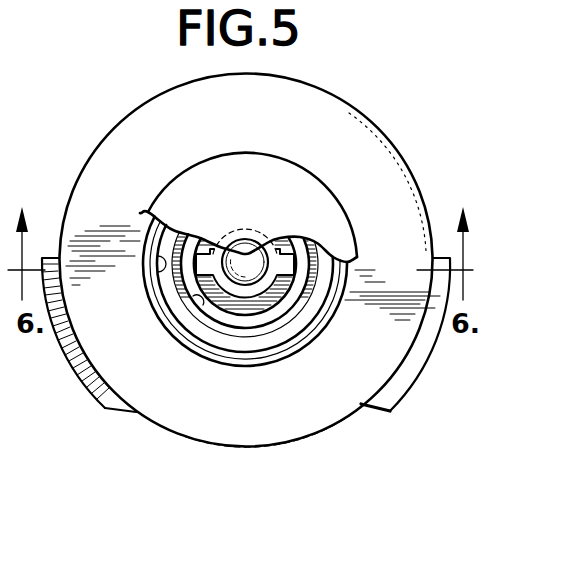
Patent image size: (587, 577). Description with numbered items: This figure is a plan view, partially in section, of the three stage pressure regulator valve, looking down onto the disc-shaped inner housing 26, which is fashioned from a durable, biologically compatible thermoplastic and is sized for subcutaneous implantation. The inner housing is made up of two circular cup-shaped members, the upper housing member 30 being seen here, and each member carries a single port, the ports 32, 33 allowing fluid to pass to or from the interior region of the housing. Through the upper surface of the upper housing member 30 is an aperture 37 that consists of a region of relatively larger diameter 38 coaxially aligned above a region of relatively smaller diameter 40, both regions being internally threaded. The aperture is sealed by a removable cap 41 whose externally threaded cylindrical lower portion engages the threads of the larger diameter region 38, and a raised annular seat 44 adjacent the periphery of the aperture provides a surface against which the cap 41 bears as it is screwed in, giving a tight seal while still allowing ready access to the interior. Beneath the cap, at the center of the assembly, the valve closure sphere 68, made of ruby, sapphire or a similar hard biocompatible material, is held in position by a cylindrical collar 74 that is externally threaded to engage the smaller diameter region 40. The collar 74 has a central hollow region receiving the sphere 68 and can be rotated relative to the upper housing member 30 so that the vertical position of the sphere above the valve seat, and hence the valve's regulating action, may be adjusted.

The inner housing 26 is at (190, 455).
The upper housing member 30 is at (388, 190).
The port 32 is at (412, 384).
The port 33 is at (88, 397).
The aperture 37 is at (294, 355).
The region of relatively larger diameter 38 is at (163, 278).
The region of relatively smaller diameter 40 is at (205, 303).
The removable cap 41 is at (285, 146).
The raised annular seat 44 is at (233, 355).
The sphere 68 is at (244, 259).
The cylindrical collar 74 is at (197, 245).